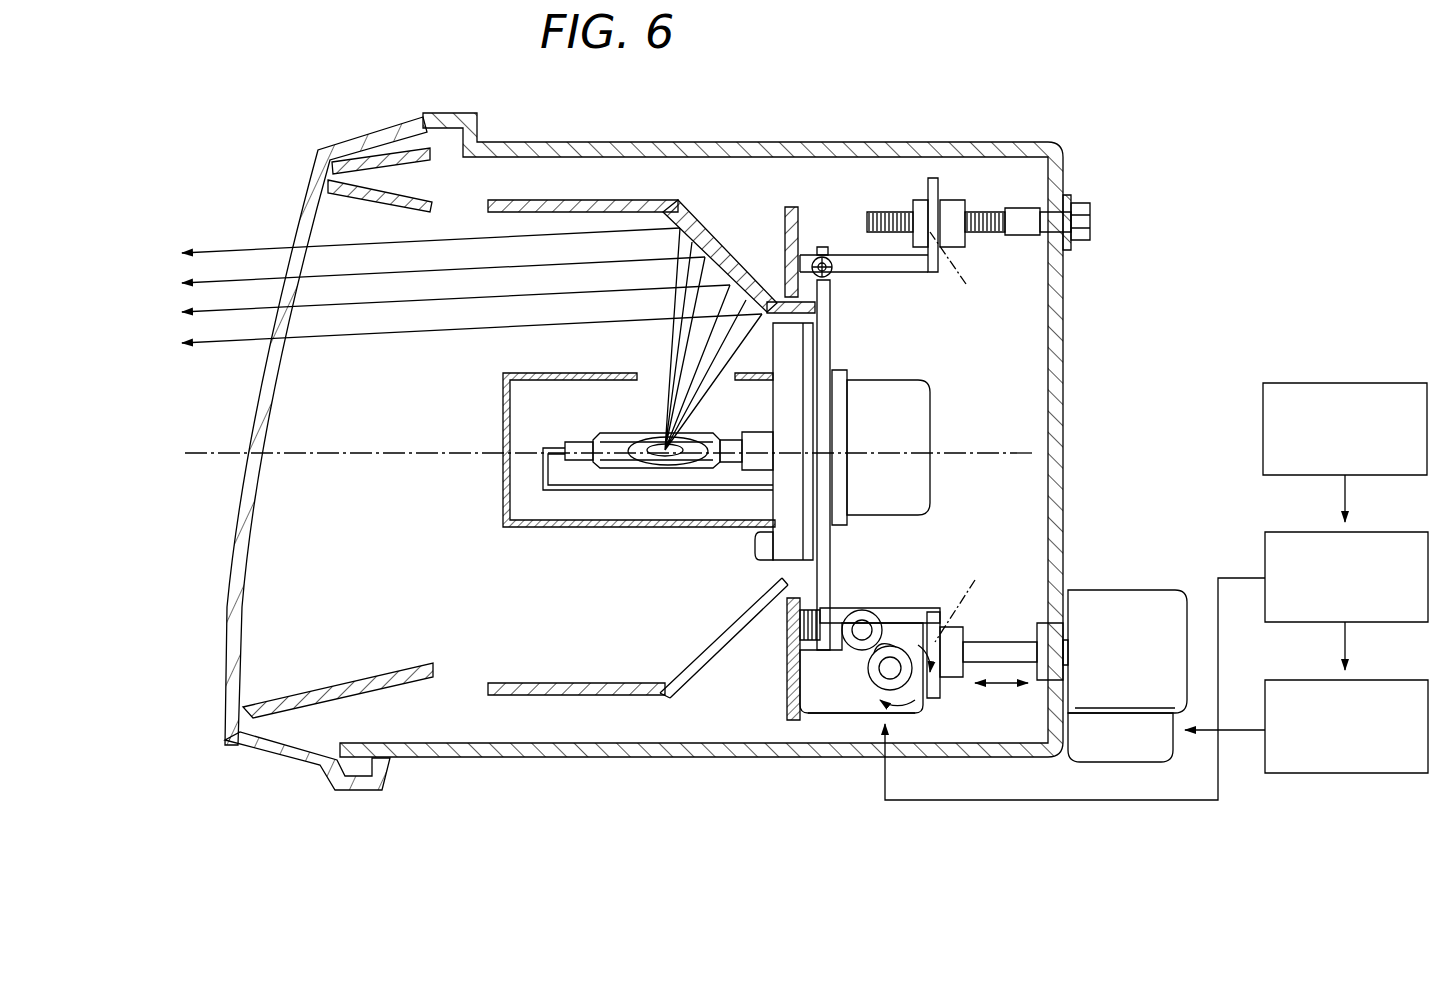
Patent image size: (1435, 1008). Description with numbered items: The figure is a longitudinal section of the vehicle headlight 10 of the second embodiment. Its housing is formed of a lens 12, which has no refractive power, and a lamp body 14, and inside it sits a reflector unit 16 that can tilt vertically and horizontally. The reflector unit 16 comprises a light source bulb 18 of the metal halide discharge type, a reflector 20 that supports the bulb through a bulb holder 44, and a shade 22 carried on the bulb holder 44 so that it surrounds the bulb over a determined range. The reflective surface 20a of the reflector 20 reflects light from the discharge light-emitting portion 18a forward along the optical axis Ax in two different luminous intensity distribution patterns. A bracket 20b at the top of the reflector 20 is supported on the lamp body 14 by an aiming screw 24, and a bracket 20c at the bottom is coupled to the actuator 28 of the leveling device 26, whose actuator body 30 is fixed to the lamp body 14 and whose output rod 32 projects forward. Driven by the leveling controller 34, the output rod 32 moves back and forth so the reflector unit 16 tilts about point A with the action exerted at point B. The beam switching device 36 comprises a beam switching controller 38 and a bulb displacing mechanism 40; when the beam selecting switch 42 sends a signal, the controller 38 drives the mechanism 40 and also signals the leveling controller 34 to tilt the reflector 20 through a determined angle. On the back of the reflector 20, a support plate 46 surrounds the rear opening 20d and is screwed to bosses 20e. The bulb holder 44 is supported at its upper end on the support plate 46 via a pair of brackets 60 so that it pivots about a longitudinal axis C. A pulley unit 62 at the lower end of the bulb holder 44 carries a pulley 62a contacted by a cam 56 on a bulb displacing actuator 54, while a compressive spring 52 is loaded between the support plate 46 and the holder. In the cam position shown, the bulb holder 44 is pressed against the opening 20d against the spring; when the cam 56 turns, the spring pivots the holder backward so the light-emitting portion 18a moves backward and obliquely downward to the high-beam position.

The vehicle headlight 10 is at (303, 140).
The lens 12 is at (298, 218).
The lamp body 14 is at (876, 142).
The reflector unit 16 is at (490, 488).
The light source bulb 18 is at (612, 432).
The discharge light-emitting portion 18a is at (662, 443).
The reflector 20 is at (718, 220).
The reflective surface 20a is at (695, 262).
The bracket 20b is at (938, 178).
The bracket 20c is at (938, 685).
The opening 20d is at (793, 375).
The boss 20e is at (707, 205).
The shade 22 is at (507, 415).
The aiming screw 24 is at (980, 227).
The leveling device 26 is at (1233, 775).
The actuator 28 is at (1100, 590).
The actuator body 30 is at (1148, 592).
The output rod 32 is at (1010, 645).
The leveling controller 34 is at (1400, 680).
The beam switching device 36 is at (1172, 432).
The beam switching controller 38 is at (1397, 532).
The bulb displacing mechanism 40 is at (830, 725).
The beam selecting switch 42 is at (1393, 383).
The bulb holder 44 is at (833, 423).
The support plate 46 is at (785, 645).
The compressive spring 52 is at (787, 610).
The bulb displacing actuator 54 is at (922, 722).
The cam 56 is at (880, 690).
The bracket 60 is at (807, 258).
The pulley unit 62 is at (849, 606).
The pulley 62a is at (870, 612).
The point A is at (955, 267).
The point B is at (963, 594).
The longitudinal axis C is at (838, 277).
The optical axis Ax is at (318, 465).